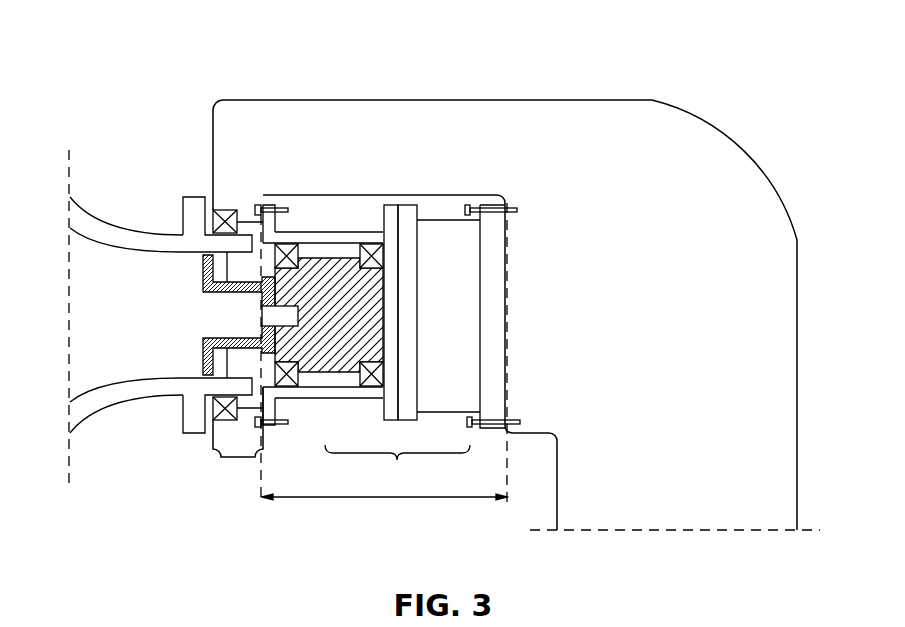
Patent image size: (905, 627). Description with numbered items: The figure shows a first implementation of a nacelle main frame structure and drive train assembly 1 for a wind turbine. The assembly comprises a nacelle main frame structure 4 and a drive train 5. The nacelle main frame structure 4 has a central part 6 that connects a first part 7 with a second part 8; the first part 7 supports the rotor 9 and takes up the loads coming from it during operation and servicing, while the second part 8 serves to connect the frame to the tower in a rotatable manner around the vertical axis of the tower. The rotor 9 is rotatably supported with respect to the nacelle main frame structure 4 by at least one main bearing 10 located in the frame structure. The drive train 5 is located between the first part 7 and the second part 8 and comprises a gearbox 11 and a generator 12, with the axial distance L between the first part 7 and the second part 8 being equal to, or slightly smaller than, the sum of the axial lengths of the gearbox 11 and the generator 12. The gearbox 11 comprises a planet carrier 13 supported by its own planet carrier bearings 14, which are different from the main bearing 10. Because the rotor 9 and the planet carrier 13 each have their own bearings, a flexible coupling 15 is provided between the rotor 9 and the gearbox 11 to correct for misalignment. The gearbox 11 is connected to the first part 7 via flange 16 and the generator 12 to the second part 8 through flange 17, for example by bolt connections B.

The nacelle main frame structure and drive train assembly 1 is at (760, 95).
The nacelle main frame structure 4 is at (678, 118).
The drive train 5 is at (397, 471).
The central part 6 is at (399, 155).
The first part 7 is at (222, 155).
The second part 8 is at (707, 333).
The rotor 9 is at (140, 268).
The main bearing 10 is at (228, 222).
The gearbox 11 is at (325, 381).
The generator 12 is at (437, 392).
The planet carrier 13 is at (335, 277).
The planet carrier bearings 14 is at (371, 248).
The flexible coupling 15 is at (207, 380).
The flange 16 is at (265, 208).
The flange 17 is at (493, 250).
The bolt connections B is at (287, 209).
The axial distance L is at (384, 513).